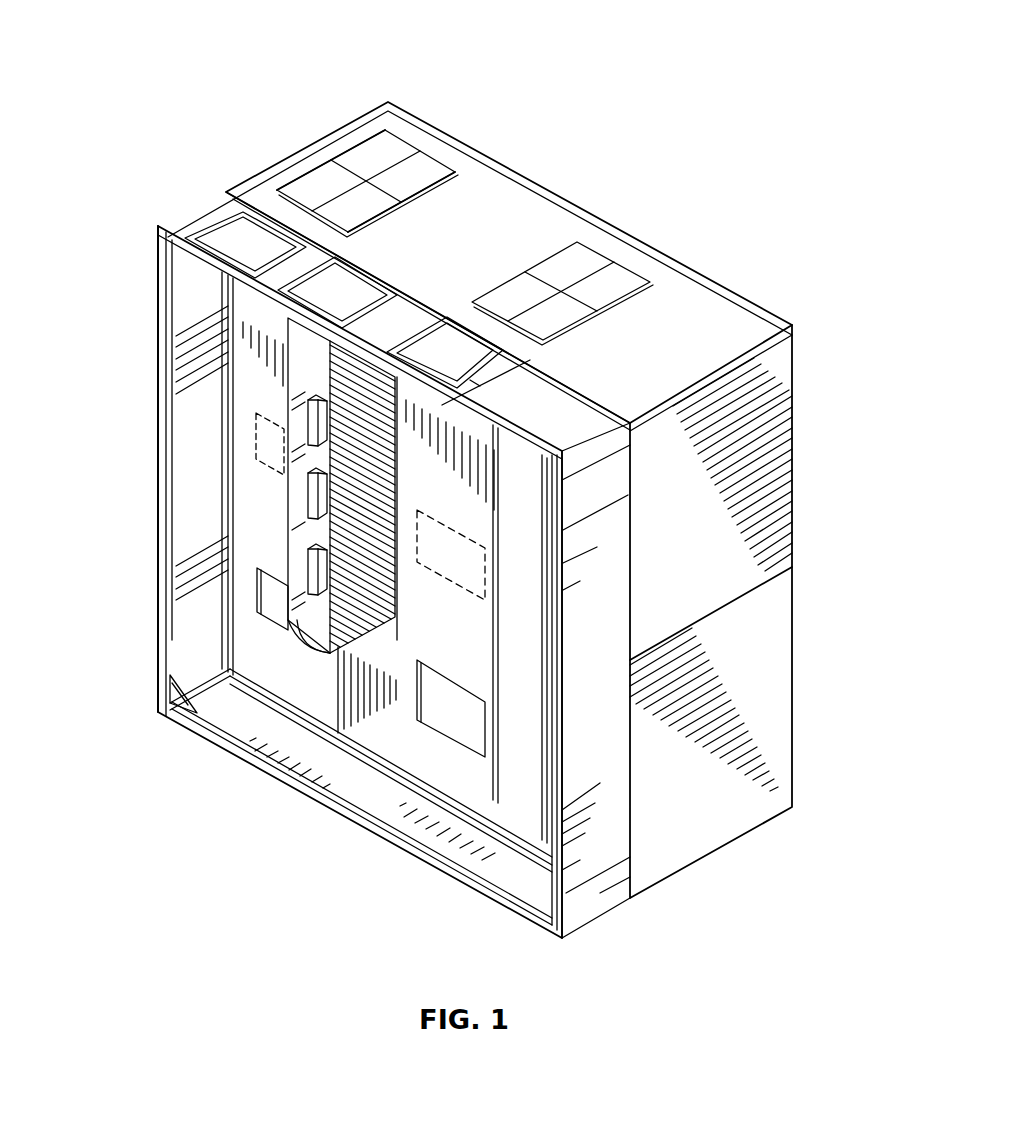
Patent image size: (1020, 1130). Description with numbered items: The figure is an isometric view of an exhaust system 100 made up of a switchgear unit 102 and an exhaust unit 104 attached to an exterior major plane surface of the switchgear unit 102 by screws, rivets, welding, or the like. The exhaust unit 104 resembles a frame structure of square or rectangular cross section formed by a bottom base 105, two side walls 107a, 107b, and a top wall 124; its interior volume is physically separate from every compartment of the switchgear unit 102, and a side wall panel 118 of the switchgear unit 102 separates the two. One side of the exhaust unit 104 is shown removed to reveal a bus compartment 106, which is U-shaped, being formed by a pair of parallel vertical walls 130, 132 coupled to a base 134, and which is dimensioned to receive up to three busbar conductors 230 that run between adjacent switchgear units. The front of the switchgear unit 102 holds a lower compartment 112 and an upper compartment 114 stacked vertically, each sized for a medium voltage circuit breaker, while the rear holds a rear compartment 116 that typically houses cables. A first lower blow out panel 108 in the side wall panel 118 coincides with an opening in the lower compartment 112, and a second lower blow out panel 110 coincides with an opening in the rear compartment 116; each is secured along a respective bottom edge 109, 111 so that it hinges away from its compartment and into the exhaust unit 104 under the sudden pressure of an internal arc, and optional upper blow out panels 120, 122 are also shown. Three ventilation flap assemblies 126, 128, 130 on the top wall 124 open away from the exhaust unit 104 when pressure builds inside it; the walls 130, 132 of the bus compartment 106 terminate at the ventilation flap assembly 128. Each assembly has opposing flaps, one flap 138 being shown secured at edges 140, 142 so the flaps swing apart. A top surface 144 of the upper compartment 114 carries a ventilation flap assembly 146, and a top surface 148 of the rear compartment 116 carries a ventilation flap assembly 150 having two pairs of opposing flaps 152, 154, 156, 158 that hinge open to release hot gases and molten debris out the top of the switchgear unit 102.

The exhaust system 100 is at (148, 58).
The switchgear unit 102 is at (737, 849).
The exhaust unit 104 is at (602, 926).
The bottom base 105 is at (520, 868).
The bus compartment 106 is at (290, 548).
The side wall 107a is at (588, 876).
The side wall 107b is at (185, 648).
The first lower blow out panel 108 is at (445, 712).
The bottom edge 109 is at (463, 748).
The second lower blow out panel 110 is at (275, 594).
The bottom edge 111 is at (232, 668).
The lower compartment 112 is at (792, 668).
The upper compartment 114 is at (770, 497).
The rear compartment 116 is at (500, 207).
The side wall panel 118 is at (441, 647).
The upper blow out panel 120 is at (500, 563).
The upper blow out panel 122 is at (256, 428).
The top wall 124 is at (575, 421).
The ventilation flap assembly 126 is at (492, 361).
The ventilation flap assembly 128 is at (298, 303).
The ventilation flap assembly 130 is at (225, 242).
The vertical wall 132 is at (290, 378).
The base 134 is at (300, 620).
The flap 138 is at (440, 348).
The edge 140 is at (476, 380).
The edge 142 is at (397, 298).
The top surface 144 is at (722, 330).
The ventilation flap assembly 146 is at (625, 272).
The top surface 148 is at (493, 210).
The ventilation flap assembly 150 is at (398, 140).
The flap 152 is at (437, 165).
The flap 154 is at (370, 205).
The flap 156 is at (362, 147).
The flap 158 is at (312, 183).
The busbar conductors 230 is at (295, 482).